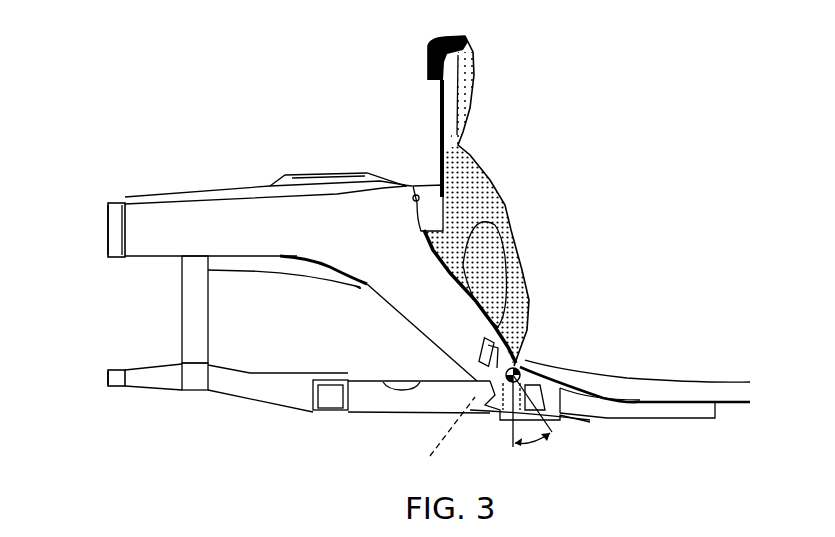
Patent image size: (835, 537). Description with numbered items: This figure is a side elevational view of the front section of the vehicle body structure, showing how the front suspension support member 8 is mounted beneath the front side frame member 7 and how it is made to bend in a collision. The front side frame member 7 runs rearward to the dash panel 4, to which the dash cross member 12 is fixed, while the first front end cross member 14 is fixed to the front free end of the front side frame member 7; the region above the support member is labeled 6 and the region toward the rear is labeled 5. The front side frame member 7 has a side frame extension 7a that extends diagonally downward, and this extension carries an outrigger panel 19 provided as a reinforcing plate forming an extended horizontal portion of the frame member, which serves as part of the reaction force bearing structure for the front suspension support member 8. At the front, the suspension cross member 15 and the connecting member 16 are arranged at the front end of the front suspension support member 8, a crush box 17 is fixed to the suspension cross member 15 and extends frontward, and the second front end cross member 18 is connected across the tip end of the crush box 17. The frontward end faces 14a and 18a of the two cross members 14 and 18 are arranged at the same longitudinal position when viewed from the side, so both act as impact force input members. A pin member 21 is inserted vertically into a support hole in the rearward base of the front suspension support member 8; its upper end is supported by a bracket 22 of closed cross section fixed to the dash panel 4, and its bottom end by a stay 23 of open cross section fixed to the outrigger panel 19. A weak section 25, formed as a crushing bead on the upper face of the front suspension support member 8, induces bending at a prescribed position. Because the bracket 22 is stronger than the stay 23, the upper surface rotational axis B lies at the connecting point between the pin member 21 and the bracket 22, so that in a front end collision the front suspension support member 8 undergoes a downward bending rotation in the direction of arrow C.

The dash panel 4 is at (509, 223).
The seat cushion 5 is at (638, 190).
The seat back frame unit 6 is at (324, 142).
The front side frame member 7 is at (239, 227).
The side frame extension 7a is at (398, 288).
The front suspension support member 8 is at (363, 395).
The dash cross member 12 is at (417, 205).
The first front end cross member 14 is at (117, 201).
The frontward end face 14a is at (108, 232).
The suspension cross member 15 is at (193, 377).
The connecting member 16 is at (197, 293).
The crush box 17 is at (152, 388).
The second front end cross member 18 is at (116, 368).
The frontward end face 18a is at (108, 378).
The outrigger panel 19 is at (676, 412).
The pin member 21 is at (437, 435).
The bracket 22 is at (508, 360).
The stay 23 is at (505, 415).
The weak section 25 is at (404, 382).
The upper surface rotational axis B is at (519, 367).
The direction of downward bending rotation C is at (538, 442).